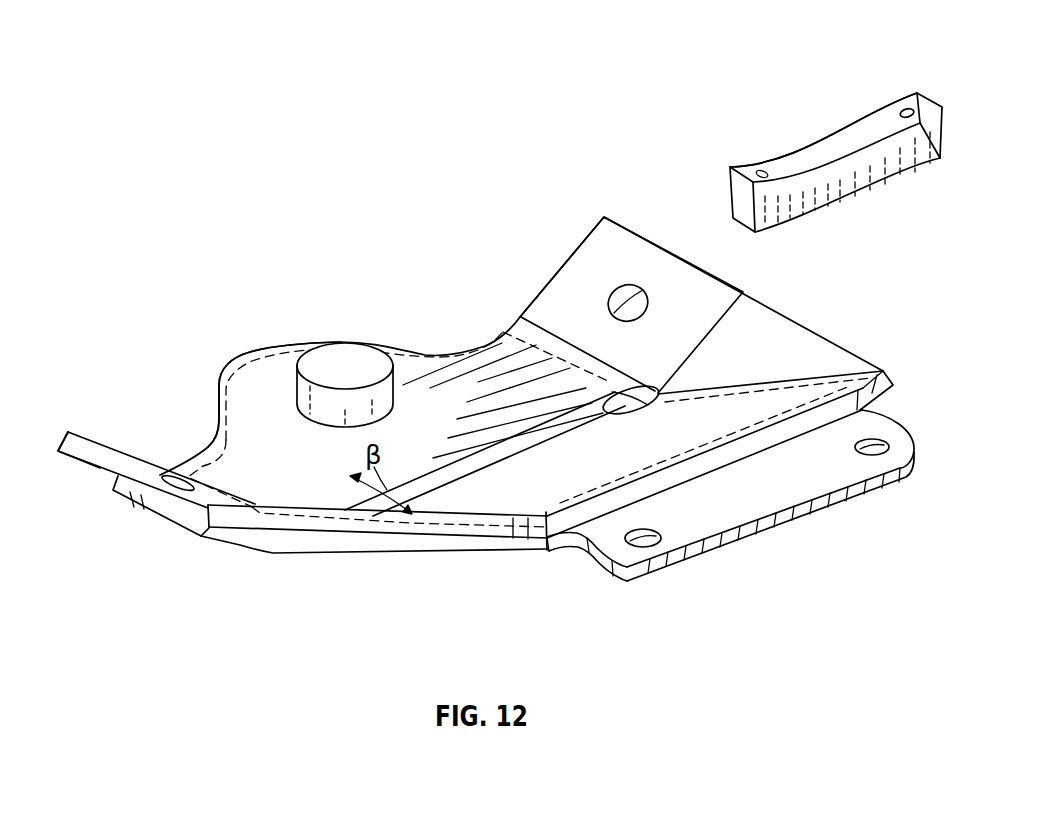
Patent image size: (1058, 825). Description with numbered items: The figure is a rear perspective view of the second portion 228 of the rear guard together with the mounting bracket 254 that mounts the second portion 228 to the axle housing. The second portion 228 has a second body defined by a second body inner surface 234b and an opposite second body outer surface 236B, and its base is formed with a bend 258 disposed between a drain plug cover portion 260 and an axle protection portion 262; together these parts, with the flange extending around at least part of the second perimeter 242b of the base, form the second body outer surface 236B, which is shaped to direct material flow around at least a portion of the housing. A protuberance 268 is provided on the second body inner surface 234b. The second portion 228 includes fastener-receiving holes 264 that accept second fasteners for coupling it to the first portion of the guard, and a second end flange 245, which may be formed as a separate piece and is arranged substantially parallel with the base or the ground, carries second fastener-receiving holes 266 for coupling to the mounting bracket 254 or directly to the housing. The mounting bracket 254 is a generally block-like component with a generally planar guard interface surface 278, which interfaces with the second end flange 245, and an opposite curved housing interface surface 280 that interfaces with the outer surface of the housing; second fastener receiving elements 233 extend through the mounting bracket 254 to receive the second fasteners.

The second portion 228 is at (197, 282).
The second fastener receiving elements 233 is at (761, 173).
The second body inner surface 234b is at (131, 465).
The second body outer surface 236B is at (98, 456).
The second perimeter 242b is at (452, 356).
The second end flange 245 is at (780, 490).
The mounting bracket 254 is at (917, 82).
The bend 258 is at (382, 502).
The drain plug cover portion 260 is at (252, 412).
The axle protection portion 262 is at (513, 490).
The fastener-receiving holes 264 is at (642, 298).
The second fastener-receiving holes 266 is at (645, 537).
The protuberance 268 is at (330, 363).
The guard interface surface 278 is at (838, 205).
The housing interface surface 280 is at (812, 168).